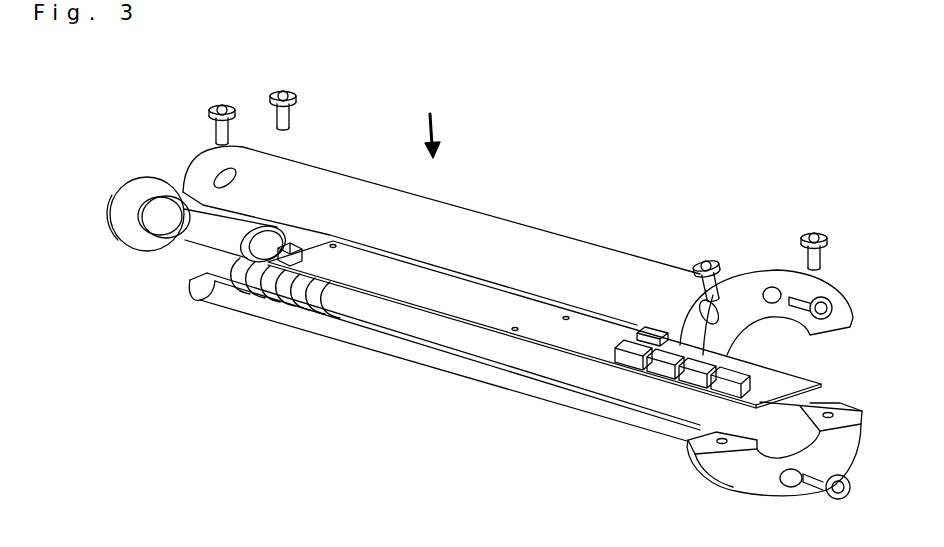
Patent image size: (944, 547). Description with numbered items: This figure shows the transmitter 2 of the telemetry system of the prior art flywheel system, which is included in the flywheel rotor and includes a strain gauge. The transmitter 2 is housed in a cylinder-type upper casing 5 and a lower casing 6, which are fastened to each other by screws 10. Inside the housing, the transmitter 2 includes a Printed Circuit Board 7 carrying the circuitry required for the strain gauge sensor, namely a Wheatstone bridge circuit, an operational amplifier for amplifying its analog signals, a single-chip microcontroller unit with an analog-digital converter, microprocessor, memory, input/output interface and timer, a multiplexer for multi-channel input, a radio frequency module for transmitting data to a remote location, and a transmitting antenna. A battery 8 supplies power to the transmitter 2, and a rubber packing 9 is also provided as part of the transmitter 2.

The transmitter 2 is at (453, 111).
The upper casing 5 is at (510, 252).
The lower casing 6 is at (407, 358).
The Printed Circuit Board 7 is at (603, 357).
The battery 8 is at (223, 260).
The rubber packing 9 is at (146, 192).
The screws 10 is at (703, 260).